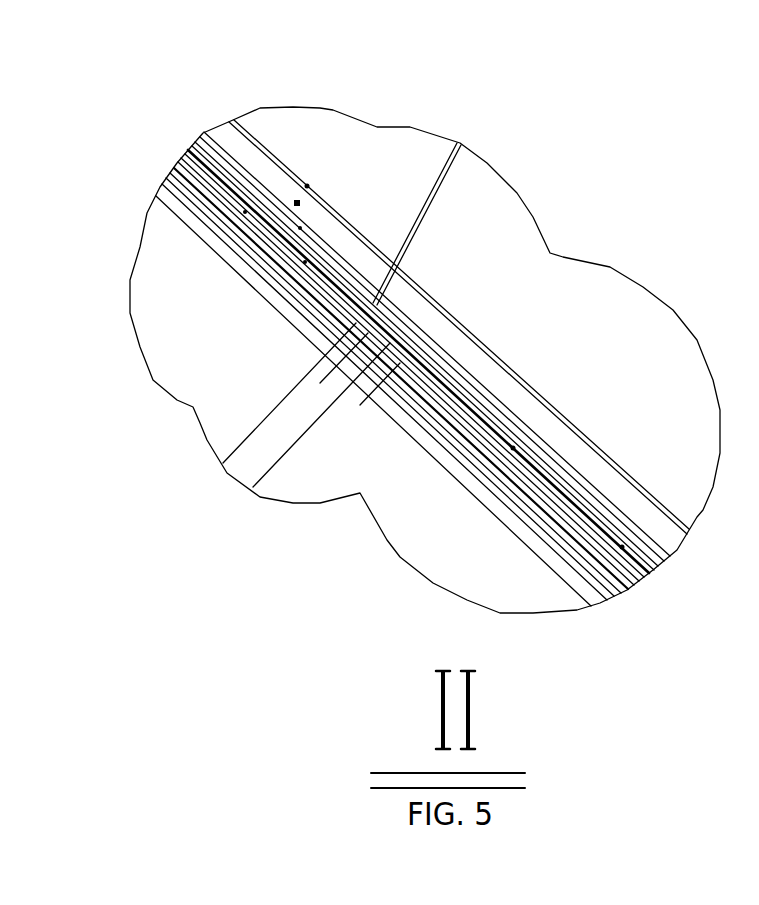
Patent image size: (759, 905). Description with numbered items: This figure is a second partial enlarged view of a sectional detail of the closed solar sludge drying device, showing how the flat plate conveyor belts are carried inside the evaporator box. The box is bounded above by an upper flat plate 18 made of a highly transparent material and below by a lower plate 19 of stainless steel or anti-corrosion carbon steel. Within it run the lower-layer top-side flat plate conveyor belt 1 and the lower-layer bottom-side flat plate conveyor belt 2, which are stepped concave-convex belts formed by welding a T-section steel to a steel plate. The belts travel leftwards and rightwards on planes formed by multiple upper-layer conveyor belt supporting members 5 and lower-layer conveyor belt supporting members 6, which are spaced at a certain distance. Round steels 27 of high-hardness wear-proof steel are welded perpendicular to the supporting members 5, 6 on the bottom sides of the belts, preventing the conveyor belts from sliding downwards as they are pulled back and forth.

The lower-layer top-side flat plate conveyor belt 1 is at (352, 272).
The lower-layer bottom-side flat plate conveyor belt 2 is at (395, 343).
The upper-layer conveyor belt supporting members 5 is at (393, 290).
The lower-layer conveyor belt supporting members 6 is at (487, 432).
The upper flat plate 18 is at (610, 460).
The lower plate 19 is at (560, 527).
The round steels 27 is at (457, 143).